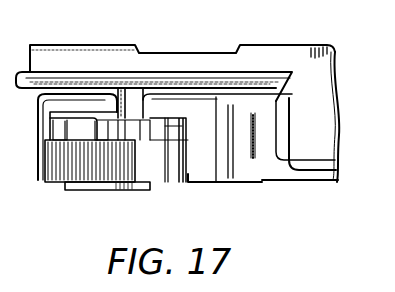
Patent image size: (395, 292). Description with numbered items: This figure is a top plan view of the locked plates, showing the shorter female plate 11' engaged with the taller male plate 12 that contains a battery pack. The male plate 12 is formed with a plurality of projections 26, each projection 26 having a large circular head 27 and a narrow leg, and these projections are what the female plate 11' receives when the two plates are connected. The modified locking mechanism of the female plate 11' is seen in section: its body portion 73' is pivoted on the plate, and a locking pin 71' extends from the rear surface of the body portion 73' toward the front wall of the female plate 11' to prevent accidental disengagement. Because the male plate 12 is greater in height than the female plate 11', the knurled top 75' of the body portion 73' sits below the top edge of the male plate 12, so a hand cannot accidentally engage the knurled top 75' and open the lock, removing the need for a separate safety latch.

The male plate 12 is at (315, 63).
The female plate 11' is at (188, 160).
The projection 26 is at (115, 122).
The large circular head 27 is at (132, 152).
The knurled top 75' is at (76, 183).
The body portion 73' is at (169, 172).
The locking pin 71' is at (191, 147).